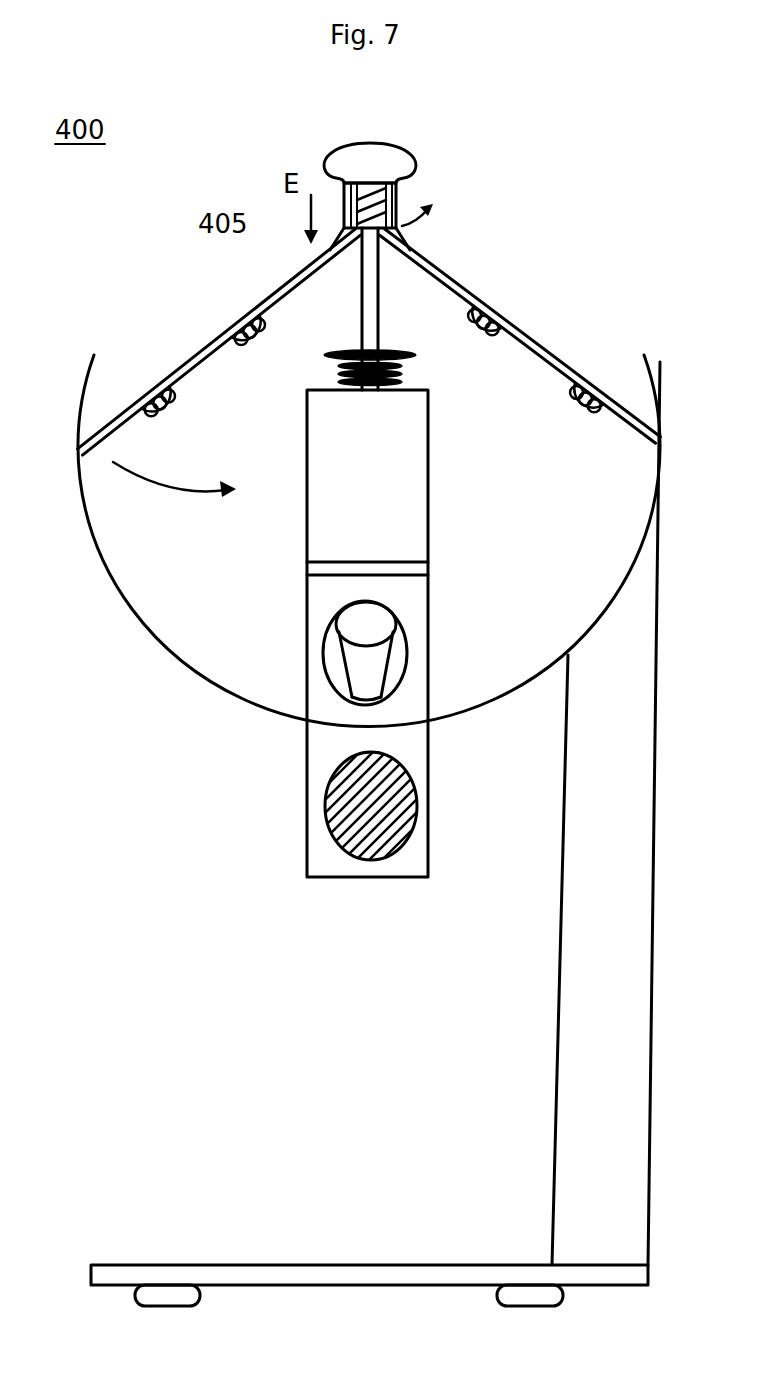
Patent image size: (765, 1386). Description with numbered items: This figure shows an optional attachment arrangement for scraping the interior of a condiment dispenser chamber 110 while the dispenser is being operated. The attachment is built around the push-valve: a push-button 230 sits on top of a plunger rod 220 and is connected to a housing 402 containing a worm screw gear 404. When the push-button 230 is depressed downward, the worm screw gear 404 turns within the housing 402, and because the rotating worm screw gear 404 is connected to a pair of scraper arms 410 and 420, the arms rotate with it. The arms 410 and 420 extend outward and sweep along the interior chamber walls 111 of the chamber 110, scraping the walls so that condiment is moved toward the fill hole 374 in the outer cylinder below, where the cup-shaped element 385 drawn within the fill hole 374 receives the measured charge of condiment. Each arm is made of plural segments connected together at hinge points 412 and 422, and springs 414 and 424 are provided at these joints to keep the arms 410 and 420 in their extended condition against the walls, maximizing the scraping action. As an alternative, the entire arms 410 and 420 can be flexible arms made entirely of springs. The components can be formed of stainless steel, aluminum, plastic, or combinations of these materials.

The chamber 110 is at (118, 598).
The interior chamber walls 111 is at (95, 538).
The plunger rod 220 is at (380, 313).
The push-button 230 is at (383, 155).
The housing 402 is at (395, 202).
The worm screw gear 404 is at (357, 233).
The scraper arm 410 is at (183, 355).
The hinge point 412 is at (233, 327).
The spring 414 is at (257, 340).
The scraper arm 420 is at (565, 363).
The hinge point 422 is at (510, 320).
The spring 424 is at (490, 340).
The fill hole 374 is at (390, 615).
The cup 385 is at (372, 665).